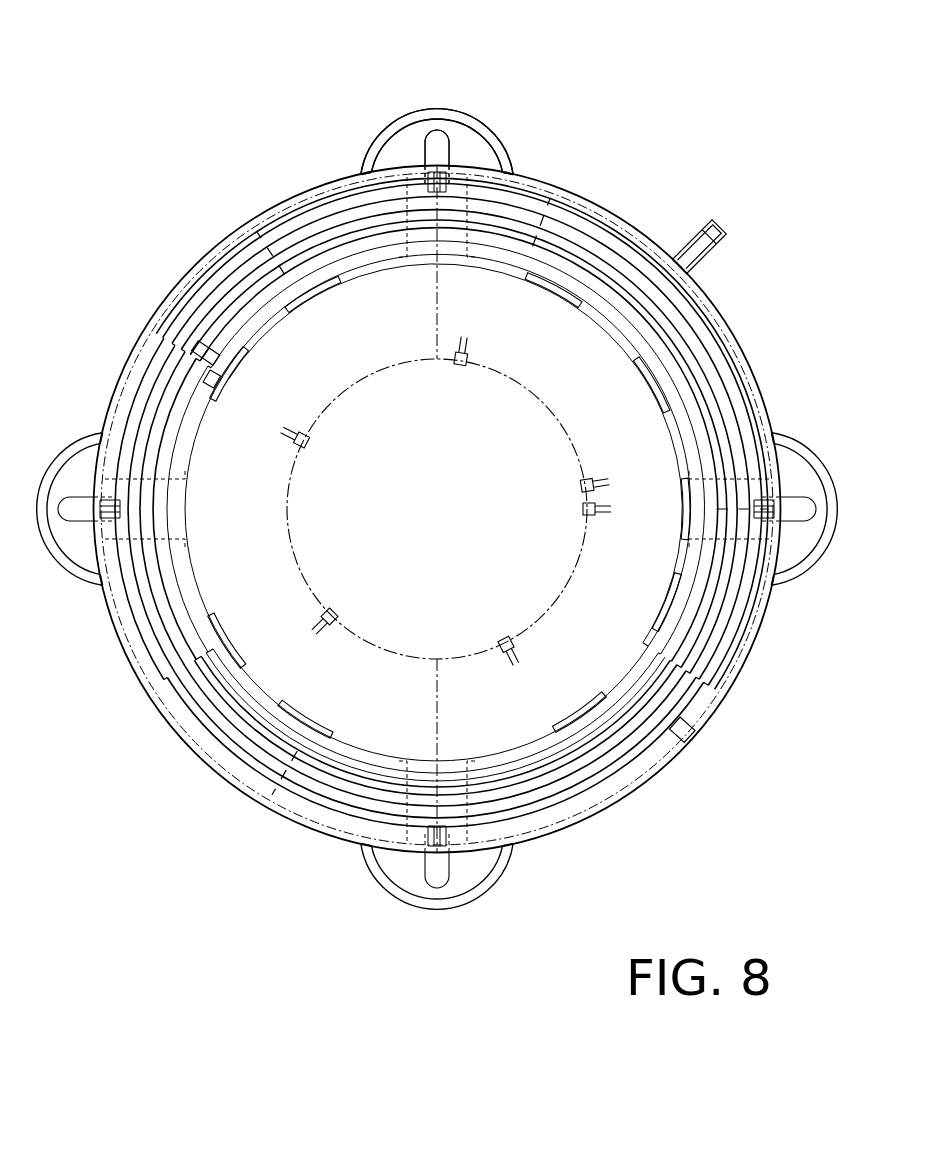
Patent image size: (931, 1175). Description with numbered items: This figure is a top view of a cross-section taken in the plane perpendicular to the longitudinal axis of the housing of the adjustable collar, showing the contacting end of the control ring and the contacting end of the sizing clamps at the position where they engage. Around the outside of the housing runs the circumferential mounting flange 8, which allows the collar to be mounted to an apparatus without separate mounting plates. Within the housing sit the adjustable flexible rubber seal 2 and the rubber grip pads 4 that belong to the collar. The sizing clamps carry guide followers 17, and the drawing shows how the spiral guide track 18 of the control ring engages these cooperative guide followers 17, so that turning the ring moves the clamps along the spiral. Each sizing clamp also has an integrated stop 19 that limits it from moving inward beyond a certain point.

The adjustable flexible rubber seal 2 is at (535, 305).
The rubber grip pads 4 is at (660, 395).
The circumferential mounting flange 8 is at (468, 128).
The guide followers 17 is at (205, 353).
The spiral guide track 18 is at (683, 730).
The integrated stop 19 is at (197, 372).